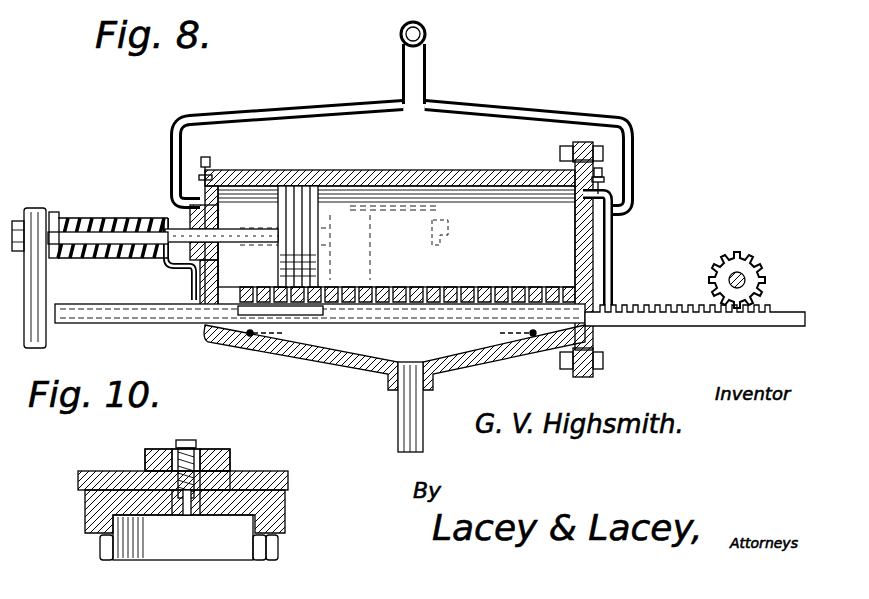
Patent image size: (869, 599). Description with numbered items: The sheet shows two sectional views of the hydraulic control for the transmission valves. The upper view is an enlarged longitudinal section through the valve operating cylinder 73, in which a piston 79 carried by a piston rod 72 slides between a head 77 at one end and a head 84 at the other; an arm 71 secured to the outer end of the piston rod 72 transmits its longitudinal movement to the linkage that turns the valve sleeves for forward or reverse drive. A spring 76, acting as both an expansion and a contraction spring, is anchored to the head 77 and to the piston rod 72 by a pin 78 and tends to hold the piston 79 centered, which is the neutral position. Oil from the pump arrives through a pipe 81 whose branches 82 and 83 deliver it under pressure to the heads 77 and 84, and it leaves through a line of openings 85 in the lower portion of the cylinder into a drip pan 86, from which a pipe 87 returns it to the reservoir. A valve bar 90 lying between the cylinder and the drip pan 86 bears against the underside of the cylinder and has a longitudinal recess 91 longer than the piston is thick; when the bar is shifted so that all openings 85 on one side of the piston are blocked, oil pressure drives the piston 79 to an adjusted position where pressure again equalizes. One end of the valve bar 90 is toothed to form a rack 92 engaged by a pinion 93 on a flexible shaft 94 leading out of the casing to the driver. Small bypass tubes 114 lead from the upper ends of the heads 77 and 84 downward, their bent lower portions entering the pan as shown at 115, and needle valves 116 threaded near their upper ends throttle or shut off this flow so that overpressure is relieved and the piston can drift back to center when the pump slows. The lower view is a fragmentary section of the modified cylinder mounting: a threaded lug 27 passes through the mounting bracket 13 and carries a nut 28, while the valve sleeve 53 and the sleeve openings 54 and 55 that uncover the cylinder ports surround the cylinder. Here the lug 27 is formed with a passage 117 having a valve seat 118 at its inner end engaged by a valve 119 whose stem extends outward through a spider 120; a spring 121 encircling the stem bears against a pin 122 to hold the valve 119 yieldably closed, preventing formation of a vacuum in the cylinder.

In FIG. 8, the arm 71 is at (38, 206).
In FIG. 8, the piston rod 72 is at (118, 218).
In FIG. 8, the cylinder 73 is at (355, 170).
In FIG. 8, the spring 76 is at (110, 252).
In FIG. 8, the head of the cylinder 77 is at (220, 262).
In FIG. 8, the pin 78 is at (60, 212).
In FIG. 8, the piston 79 is at (300, 186).
In FIG. 8, the pipe 81 is at (428, 66).
In FIG. 8, the branch 82 is at (286, 112).
In FIG. 8, the branch 83 is at (512, 113).
In FIG. 8, the head of the cylinder 84 is at (592, 256).
In FIG. 8, the openings 85 is at (365, 287).
In FIG. 8, the drip pan 86 is at (466, 360).
In FIG. 8, the pipe 87 is at (400, 416).
In FIG. 8, the valve bar 90 is at (170, 323).
In FIG. 8, the recess 91 is at (280, 315).
In FIG. 8, the rack 92 is at (700, 326).
In FIG. 8, the pinion 93 is at (728, 262).
In FIG. 8, the flexible shaft 94 is at (742, 276).
In FIG. 8, the tubes 114 is at (618, 240).
In FIG. 8, the inwardly bent lower portions of the tubes 115 is at (250, 338).
In FIG. 8, the needle valves 116 is at (211, 170).
In FIG. 10, the mounting bracket 13 is at (270, 483).
In FIG. 10, the threaded lug 27 is at (208, 455).
In FIG. 10, the nut 28 is at (222, 458).
In FIG. 10, the sleeve 53 is at (285, 500).
In FIG. 10, the openings 54 is at (105, 548).
In FIG. 10, the openings 55 is at (276, 548).
In FIG. 10, the passages 117 is at (145, 462).
In FIG. 10, the valve seats 118 is at (162, 525).
In FIG. 10, the valves 119 is at (195, 500).
In FIG. 10, the spiders 120 is at (215, 478).
In FIG. 10, the spring 121 is at (172, 460).
In FIG. 10, the pin 122 is at (186, 448).